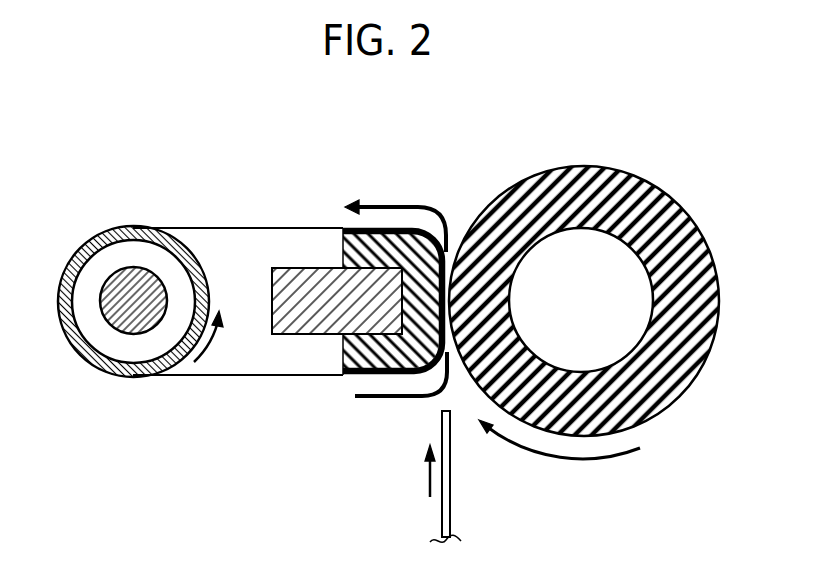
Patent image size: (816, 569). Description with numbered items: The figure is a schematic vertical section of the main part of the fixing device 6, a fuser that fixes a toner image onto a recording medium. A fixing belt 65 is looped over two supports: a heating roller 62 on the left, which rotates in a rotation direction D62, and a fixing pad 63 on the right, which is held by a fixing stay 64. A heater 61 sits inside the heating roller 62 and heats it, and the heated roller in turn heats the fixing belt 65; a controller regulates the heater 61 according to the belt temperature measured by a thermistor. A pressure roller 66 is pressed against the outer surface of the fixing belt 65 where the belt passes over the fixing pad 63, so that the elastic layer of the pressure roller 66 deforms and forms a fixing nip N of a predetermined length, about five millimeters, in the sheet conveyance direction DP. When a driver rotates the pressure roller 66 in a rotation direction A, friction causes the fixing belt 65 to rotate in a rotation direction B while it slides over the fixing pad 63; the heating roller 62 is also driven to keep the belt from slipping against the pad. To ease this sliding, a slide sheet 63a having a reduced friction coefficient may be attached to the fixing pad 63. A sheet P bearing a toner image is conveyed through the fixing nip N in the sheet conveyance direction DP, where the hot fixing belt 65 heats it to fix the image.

The fixing device 6 is at (447, 147).
The heater 61 is at (118, 283).
The heating roller 62 is at (85, 347).
The fixing pad 63 is at (343, 247).
The slide sheet 63a is at (352, 229).
The fixing stay 64 is at (272, 286).
The fixing belt 65 is at (248, 375).
The pressure roller 66 is at (617, 176).
The fixing nip N is at (436, 323).
The sheet P is at (451, 502).
The rotation direction A is at (559, 452).
The rotation direction B is at (396, 288).
The sheet conveyance direction DP is at (416, 471).
The rotation direction D62 is at (221, 336).